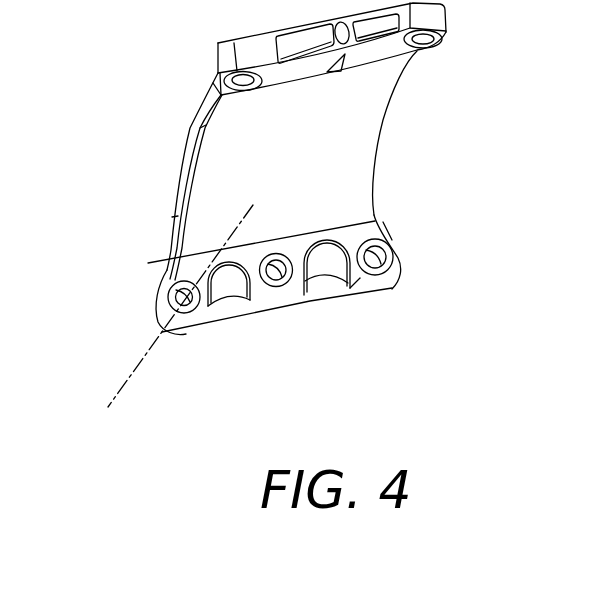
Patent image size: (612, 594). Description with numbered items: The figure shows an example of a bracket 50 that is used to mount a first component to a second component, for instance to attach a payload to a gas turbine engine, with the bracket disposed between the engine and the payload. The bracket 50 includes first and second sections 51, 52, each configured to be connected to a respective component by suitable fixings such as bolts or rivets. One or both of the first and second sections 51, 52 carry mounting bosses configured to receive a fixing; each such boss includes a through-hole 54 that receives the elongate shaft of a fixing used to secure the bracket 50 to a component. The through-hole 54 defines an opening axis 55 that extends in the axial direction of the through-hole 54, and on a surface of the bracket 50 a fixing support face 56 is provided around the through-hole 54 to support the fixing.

The bracket 50 is at (154, 163).
The first section 51 is at (421, 258).
The second section 52 is at (182, 78).
The through-hole 54 is at (205, 310).
The opening axis 55 is at (125, 380).
The fixing support face 56 is at (167, 278).